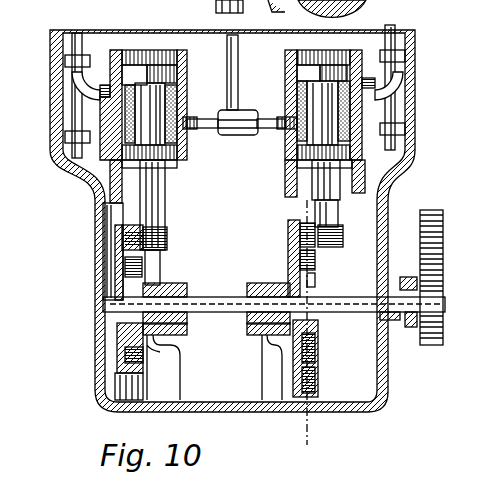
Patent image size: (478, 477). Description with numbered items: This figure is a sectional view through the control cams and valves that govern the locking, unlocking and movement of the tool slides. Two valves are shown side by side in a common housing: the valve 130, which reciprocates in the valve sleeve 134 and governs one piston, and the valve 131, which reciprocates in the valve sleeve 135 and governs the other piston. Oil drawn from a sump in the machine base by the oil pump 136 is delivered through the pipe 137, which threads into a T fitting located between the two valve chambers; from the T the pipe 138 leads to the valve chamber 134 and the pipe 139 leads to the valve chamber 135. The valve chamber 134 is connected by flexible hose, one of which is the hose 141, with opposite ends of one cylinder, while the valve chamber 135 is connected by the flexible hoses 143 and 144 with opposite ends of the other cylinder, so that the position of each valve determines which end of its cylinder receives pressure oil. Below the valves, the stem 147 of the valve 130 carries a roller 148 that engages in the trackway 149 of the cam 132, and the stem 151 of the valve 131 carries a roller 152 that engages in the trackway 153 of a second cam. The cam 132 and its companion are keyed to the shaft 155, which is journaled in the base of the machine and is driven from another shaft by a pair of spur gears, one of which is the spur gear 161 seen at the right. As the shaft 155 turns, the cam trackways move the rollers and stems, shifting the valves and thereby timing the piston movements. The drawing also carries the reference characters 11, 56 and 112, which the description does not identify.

The section line 11- 11 is at (300, 214).
The cylinder (upper figure fragment) 56 is at (362, 3).
The housing casing 112 is at (77, 118).
The valve 130 is at (150, 130).
The valve 131 is at (300, 145).
The cam 132 is at (120, 372).
The valve sleeve 134 is at (188, 193).
The valve sleeve 135 is at (287, 178).
The oil pump 136 is at (318, 366).
The pipe 137 is at (240, 82).
The pipe 138 is at (206, 117).
The pipe 139 is at (266, 117).
The flexible hose 141 is at (79, 38).
The flexible hose 143 is at (404, 24).
The flexible hose 144 is at (400, 108).
The valve stem 147 is at (167, 208).
The roller 148 is at (130, 241).
The trackway 149 is at (125, 356).
The valve stem 151 is at (330, 205).
The roller 152 is at (290, 240).
The trackway 153 is at (320, 375).
The shaft 155 is at (217, 300).
The spur gear 161 is at (430, 210).